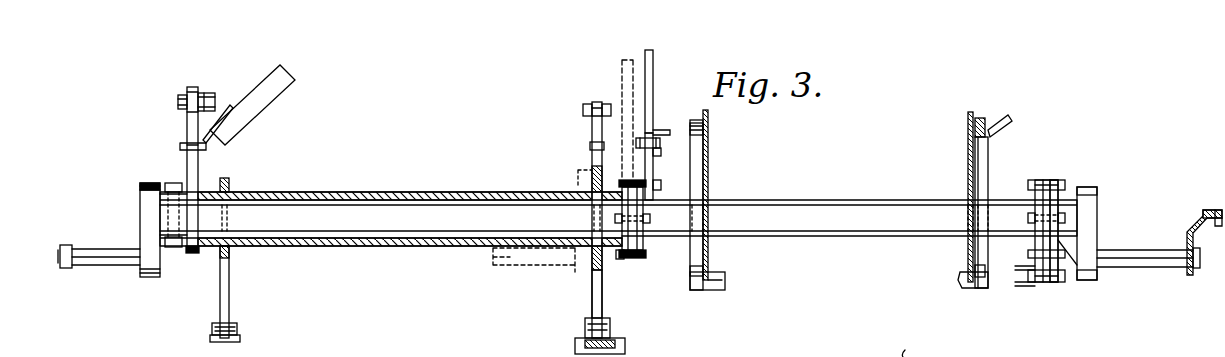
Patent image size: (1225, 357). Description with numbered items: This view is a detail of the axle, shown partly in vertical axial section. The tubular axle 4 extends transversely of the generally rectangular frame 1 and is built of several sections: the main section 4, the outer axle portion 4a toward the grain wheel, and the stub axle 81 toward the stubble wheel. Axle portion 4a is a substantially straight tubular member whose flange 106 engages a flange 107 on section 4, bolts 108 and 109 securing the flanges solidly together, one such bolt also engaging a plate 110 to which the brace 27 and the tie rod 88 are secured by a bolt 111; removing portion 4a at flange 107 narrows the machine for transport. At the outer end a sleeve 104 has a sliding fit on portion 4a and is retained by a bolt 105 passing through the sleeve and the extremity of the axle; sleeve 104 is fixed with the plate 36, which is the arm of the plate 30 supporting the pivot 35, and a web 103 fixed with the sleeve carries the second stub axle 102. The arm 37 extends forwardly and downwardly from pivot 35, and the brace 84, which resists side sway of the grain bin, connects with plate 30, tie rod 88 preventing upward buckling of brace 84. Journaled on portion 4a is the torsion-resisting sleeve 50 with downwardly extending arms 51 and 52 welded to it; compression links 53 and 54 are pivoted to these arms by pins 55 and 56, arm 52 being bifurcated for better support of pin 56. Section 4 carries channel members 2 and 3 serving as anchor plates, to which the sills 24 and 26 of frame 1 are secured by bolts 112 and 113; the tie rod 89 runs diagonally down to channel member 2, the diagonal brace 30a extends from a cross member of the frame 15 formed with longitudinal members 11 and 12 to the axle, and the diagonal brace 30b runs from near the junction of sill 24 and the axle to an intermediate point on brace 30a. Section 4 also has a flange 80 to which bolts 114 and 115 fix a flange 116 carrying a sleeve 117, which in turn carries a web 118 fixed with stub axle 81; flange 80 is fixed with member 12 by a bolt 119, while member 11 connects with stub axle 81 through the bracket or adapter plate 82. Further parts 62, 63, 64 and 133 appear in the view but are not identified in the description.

The frame 1 is at (712, 118).
The channel member 2 is at (968, 166).
The channel member 3 is at (708, 182).
The axle 4 is at (858, 200).
The axle portion 4a is at (414, 212).
The longitudinal member 11 is at (1212, 210).
The longitudinal member 12 is at (1022, 287).
The frame 15 is at (1212, 216).
The sill 24 is at (972, 117).
The sill 26 is at (660, 130).
The brace 27 is at (656, 132).
The plate 30 is at (190, 254).
The diagonal brace 30a is at (706, 286).
The diagonal brace 30b is at (964, 289).
The pivot 35 is at (178, 98).
The arm 36 is at (187, 126).
The arm 37 is at (204, 93).
The sleeve 50 is at (512, 193).
The arm 51 is at (230, 301).
The arm 52 is at (592, 300).
The compression link 53 is at (236, 324).
The compression link 54 is at (610, 330).
The pin 55 is at (242, 339).
The pin 56 is at (625, 352).
The plate 62 is at (602, 100).
The nut 63 is at (583, 112).
The bolt 64 is at (590, 147).
The flange 80 is at (1046, 180).
The stub axle 81 is at (1162, 252).
The adapter plate 82 is at (1189, 232).
The brace 84 is at (270, 82).
The tie rod 88 is at (656, 58).
The tie rod 89 is at (1008, 122).
The stub axle 102 is at (101, 252).
The web 103 is at (140, 203).
The sleeve 104 is at (150, 184).
The bolt 105 is at (170, 183).
The flange 106 is at (622, 261).
The flange 107 is at (634, 262).
The bolt 108 is at (592, 175).
The bolt 109 is at (647, 258).
The plate 110 is at (653, 182).
The bolt 111 is at (675, 158).
The bolt 112 is at (688, 116).
The bolt 113 is at (985, 125).
The bolt 114 is at (1030, 186).
The bolt 115 is at (1028, 254).
The flange 116 is at (1060, 182).
The sleeve 117 is at (1087, 189).
The web 118 is at (1094, 199).
The bolt 119 is at (1061, 275).
The bracket 133 is at (902, 350).